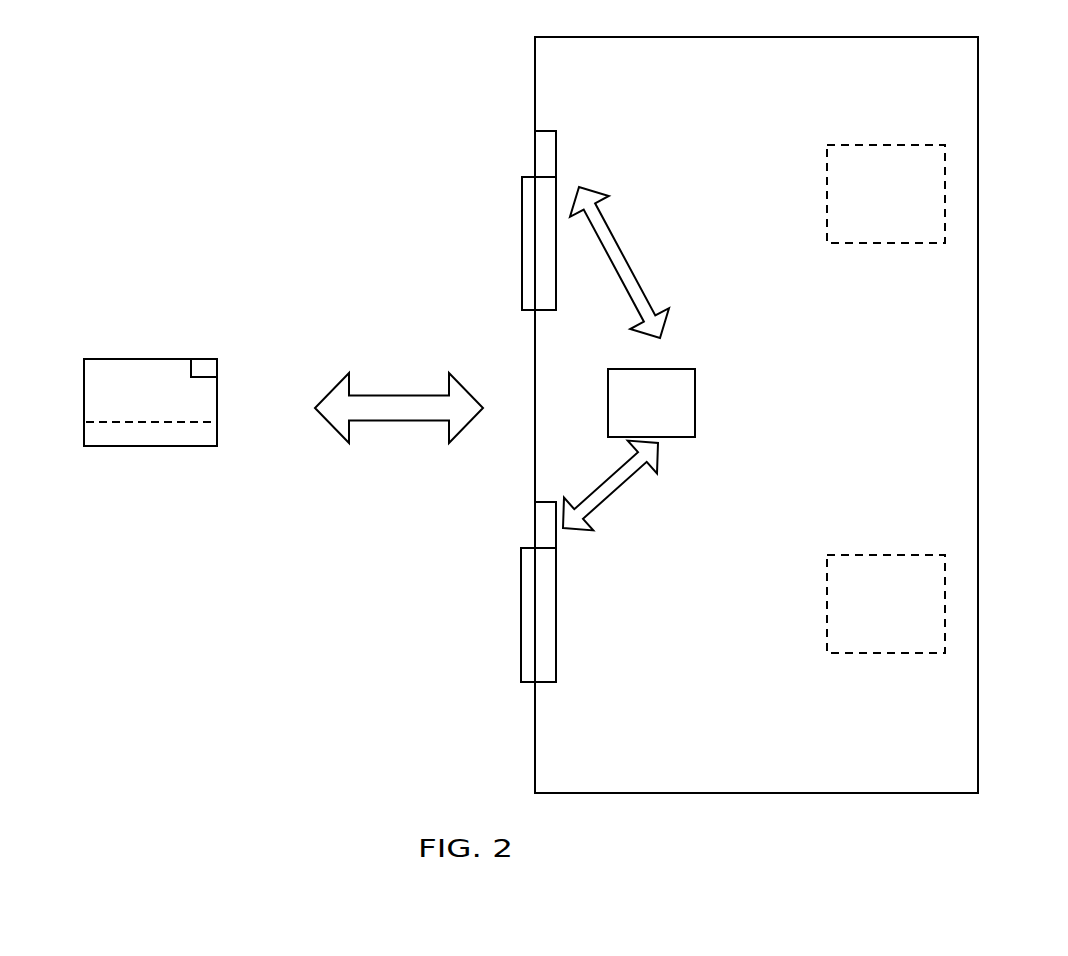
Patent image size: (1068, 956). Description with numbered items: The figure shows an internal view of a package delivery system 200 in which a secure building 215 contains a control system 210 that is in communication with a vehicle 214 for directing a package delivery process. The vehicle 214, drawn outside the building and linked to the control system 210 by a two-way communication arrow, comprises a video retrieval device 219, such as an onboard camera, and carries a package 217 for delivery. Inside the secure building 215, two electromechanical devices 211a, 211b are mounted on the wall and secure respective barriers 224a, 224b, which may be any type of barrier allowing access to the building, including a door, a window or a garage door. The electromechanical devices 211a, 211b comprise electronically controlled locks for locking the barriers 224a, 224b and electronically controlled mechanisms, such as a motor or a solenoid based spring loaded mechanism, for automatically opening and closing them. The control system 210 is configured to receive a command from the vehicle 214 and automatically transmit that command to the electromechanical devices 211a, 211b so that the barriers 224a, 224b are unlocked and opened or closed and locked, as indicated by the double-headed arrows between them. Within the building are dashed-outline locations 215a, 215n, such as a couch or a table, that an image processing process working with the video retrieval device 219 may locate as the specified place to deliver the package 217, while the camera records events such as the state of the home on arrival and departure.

The system 200 is at (134, 82).
The secure building 215 is at (980, 108).
The location 215a is at (892, 237).
The location 215n is at (892, 647).
The control system 210 is at (687, 407).
The electromechanical device 211a is at (540, 152).
The barrier 224a is at (528, 212).
The electromechanical device 211b is at (540, 530).
The barrier 224b is at (527, 598).
The vehicle 214 is at (205, 406).
The video retrieval device 219 is at (203, 367).
The package 217 is at (148, 433).